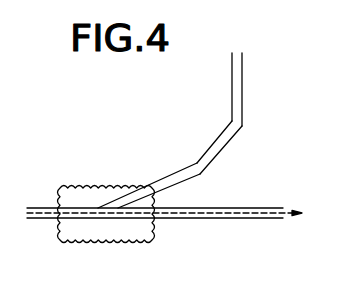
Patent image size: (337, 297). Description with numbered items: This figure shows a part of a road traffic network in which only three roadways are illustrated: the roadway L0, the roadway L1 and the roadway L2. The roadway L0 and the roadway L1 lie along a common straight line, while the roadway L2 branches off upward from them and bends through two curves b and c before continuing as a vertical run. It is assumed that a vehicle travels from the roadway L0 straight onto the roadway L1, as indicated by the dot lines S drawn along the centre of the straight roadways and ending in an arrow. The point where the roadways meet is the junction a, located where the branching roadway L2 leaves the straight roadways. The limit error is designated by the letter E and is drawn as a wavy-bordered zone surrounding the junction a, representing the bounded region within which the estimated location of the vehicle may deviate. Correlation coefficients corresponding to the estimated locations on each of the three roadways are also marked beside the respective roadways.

The junction a is at (105, 195).
The curve b is at (200, 174).
The curve c is at (242, 126).
The limit error E is at (117, 240).
The dot lines S is at (210, 218).
The roadway L0 is at (34, 230).
The roadway L1 is at (155, 205).
The roadway L2 is at (149, 183).